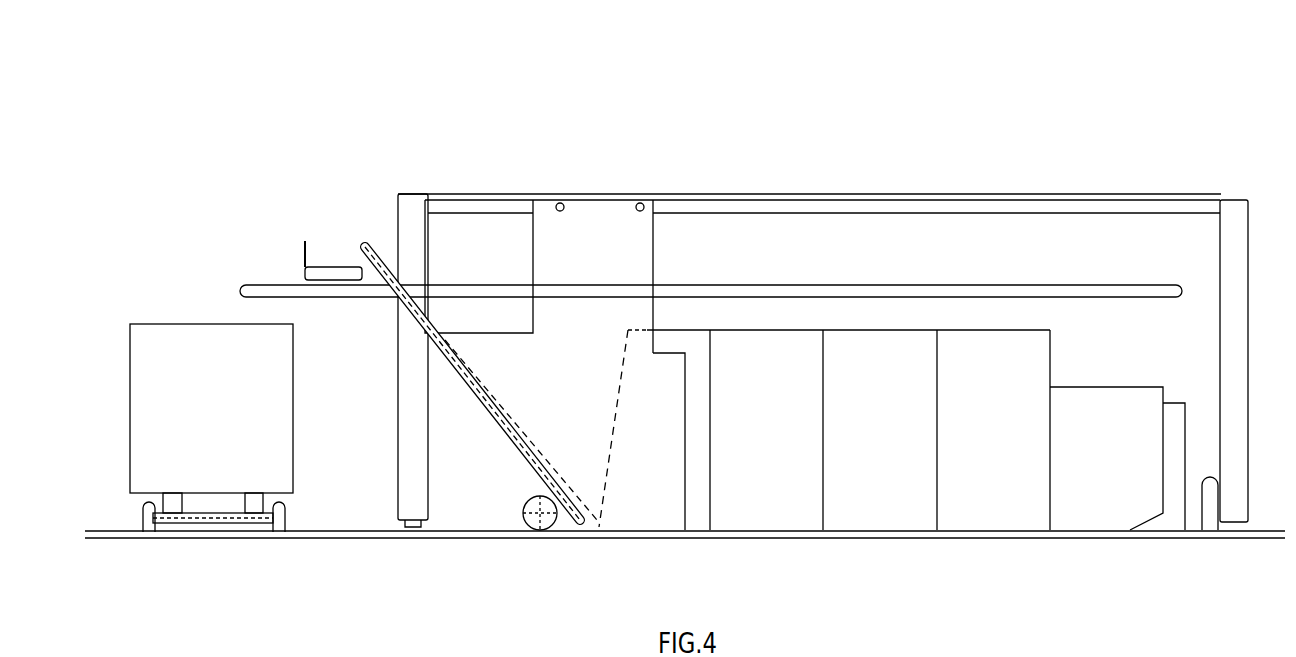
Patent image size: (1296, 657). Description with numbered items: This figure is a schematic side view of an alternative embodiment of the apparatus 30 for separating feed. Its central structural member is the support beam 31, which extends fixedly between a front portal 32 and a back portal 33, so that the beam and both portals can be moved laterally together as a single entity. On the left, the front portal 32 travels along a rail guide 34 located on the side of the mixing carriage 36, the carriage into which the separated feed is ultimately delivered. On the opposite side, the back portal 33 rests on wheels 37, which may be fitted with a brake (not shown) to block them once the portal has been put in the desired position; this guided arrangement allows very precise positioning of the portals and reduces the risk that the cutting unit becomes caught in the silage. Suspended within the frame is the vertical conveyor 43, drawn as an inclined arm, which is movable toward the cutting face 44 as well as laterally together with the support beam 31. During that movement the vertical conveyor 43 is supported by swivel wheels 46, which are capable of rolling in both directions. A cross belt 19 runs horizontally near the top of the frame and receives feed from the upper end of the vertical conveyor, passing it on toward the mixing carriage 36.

The cross belt 19 is at (335, 266).
The apparatus 30 is at (1133, 122).
The support beam 31 is at (1030, 213).
The front portal 32 is at (410, 222).
The back portal 33 is at (1233, 273).
The rail guide 34 is at (413, 531).
The mixing carriage 36 is at (232, 458).
The wheels 37 is at (1208, 513).
The vertical conveyor 43 is at (497, 400).
The cutting face 44 is at (607, 468).
The swivel wheels 46 is at (533, 531).